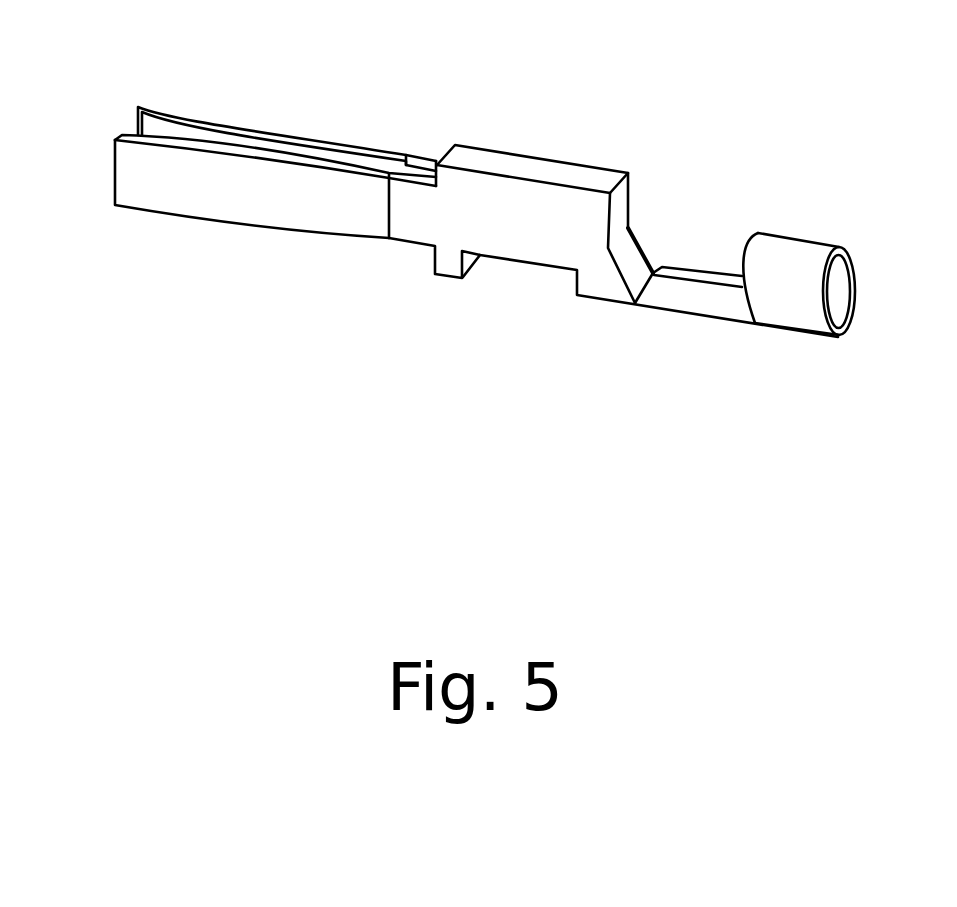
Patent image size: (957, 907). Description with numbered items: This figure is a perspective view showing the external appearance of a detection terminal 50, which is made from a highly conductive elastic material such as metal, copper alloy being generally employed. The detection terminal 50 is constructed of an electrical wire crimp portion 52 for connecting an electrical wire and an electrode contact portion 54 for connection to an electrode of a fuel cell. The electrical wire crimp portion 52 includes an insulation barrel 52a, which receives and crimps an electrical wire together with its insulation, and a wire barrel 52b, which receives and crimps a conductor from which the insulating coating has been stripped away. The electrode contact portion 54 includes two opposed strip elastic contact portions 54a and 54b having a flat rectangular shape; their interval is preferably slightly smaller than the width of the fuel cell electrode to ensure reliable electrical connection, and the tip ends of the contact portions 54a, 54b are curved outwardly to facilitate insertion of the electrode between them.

The detection terminal 50 is at (520, 487).
The electrical wire crimp portion 52 is at (863, 368).
The insulation barrel 52a is at (800, 243).
The wire barrel 52b is at (675, 260).
The electrode contact portion 54 is at (413, 293).
The contact portion 54a is at (132, 134).
The contact portion 54b is at (163, 110).